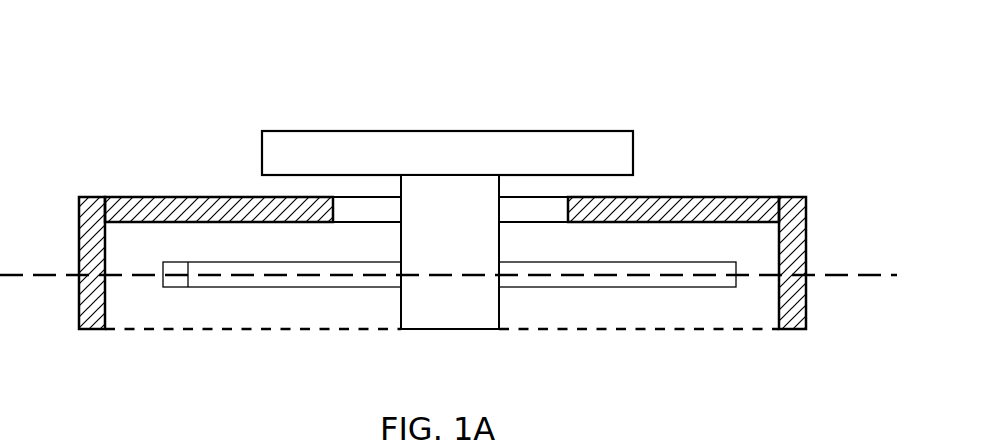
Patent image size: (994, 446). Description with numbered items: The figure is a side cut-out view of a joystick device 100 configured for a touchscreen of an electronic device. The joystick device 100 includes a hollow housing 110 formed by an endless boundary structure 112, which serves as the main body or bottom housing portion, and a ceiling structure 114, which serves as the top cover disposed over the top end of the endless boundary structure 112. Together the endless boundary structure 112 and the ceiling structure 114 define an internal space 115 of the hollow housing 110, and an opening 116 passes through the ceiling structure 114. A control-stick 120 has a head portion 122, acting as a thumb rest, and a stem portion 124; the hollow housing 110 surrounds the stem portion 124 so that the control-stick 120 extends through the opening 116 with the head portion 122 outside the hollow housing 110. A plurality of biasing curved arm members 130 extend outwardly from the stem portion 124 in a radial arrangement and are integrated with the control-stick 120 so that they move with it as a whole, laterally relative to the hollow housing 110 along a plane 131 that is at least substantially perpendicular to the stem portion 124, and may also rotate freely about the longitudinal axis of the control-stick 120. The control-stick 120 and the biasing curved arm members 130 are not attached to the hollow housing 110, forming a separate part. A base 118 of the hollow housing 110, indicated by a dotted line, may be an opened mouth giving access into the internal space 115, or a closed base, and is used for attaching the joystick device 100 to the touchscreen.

The joystick device 100 is at (748, 90).
The hollow housing 110 is at (480, 226).
The endless boundary structure 112 is at (807, 308).
The ceiling structure 114 is at (657, 192).
The internal space 115 is at (603, 307).
The opening 116 is at (367, 214).
The base 118 is at (297, 333).
The control-stick 120 is at (448, 223).
The head portion 122 is at (477, 143).
The stem portion 124 is at (457, 313).
The biasing curved arm members 130 is at (222, 287).
The plane 131 is at (832, 273).